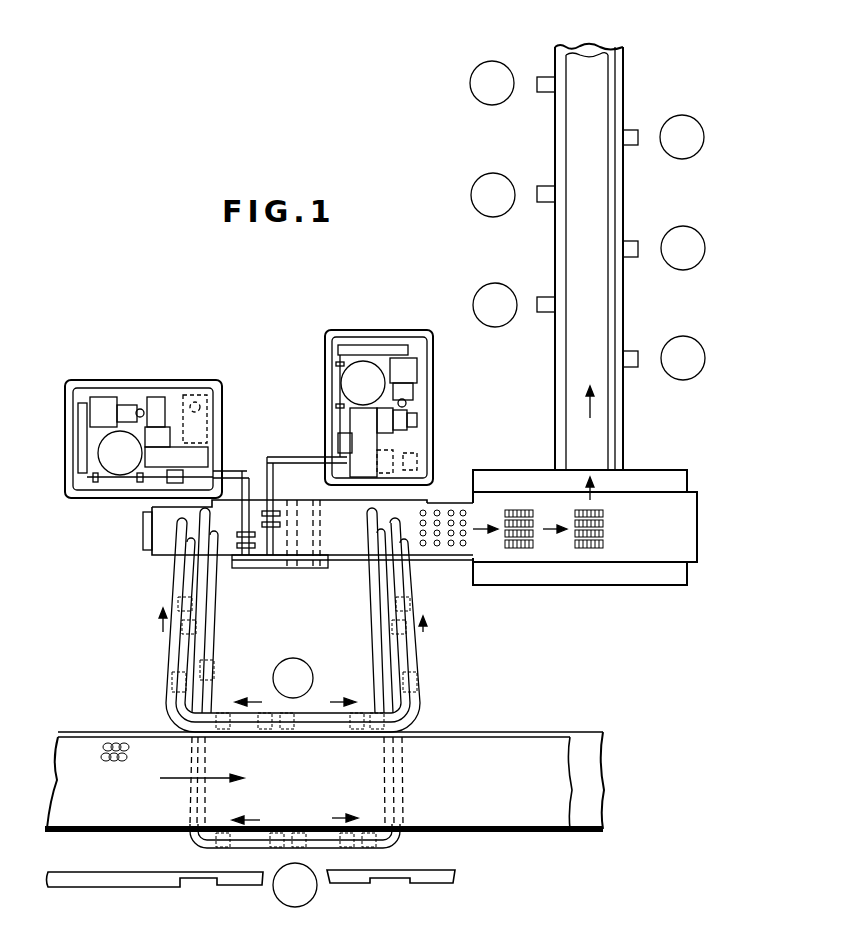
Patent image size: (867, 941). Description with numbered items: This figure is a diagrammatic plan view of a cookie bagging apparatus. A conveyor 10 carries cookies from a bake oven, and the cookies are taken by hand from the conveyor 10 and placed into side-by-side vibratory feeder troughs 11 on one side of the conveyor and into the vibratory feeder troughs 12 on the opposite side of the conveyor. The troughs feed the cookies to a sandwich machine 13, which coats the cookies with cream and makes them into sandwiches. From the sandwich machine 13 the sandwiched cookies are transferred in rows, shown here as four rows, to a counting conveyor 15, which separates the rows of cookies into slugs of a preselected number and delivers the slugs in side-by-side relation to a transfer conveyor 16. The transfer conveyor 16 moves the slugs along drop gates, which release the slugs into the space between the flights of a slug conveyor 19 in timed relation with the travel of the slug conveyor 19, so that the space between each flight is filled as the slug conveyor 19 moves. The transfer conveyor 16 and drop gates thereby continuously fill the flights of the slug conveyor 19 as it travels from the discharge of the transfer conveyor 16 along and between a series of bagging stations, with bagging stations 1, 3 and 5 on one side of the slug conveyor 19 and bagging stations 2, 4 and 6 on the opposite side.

The bagging station 1 is at (692, 367).
The bagging station 2 is at (482, 307).
The bagging station 3 is at (690, 257).
The bagging station 4 is at (485, 194).
The bagging station 5 is at (692, 138).
The bagging station 6 is at (481, 90).
The conveyor 10 is at (117, 734).
The vibratory feeder troughs 11 is at (193, 842).
The vibratory feeder troughs 12 is at (372, 711).
The sandwich machine 13 is at (273, 568).
The counting conveyor 15 is at (450, 556).
The transfer conveyor 16 is at (528, 585).
The slug conveyor 19 is at (603, 447).